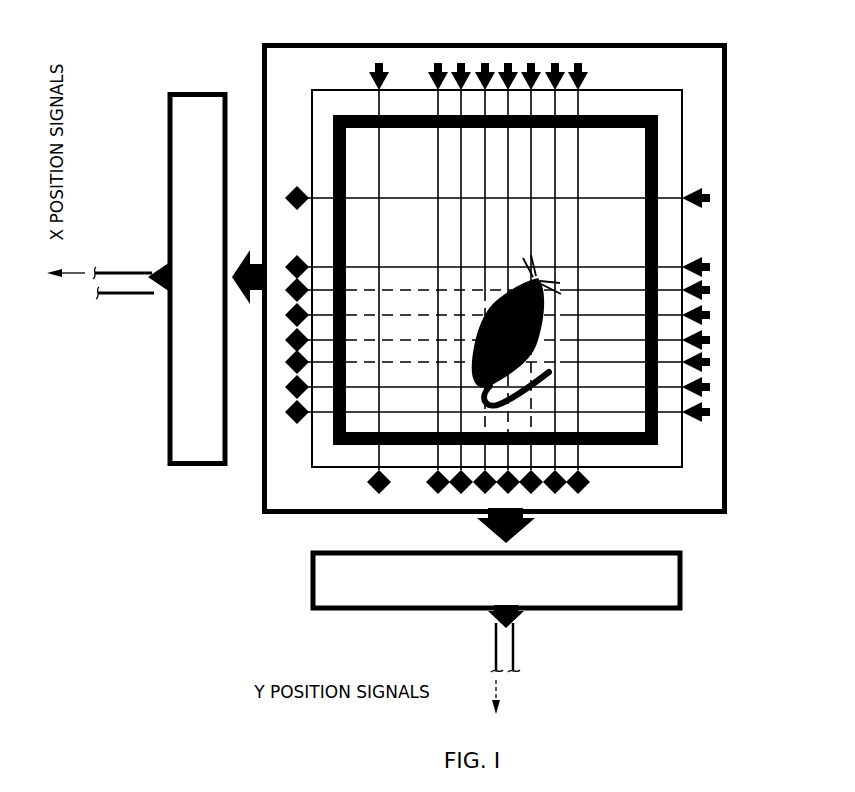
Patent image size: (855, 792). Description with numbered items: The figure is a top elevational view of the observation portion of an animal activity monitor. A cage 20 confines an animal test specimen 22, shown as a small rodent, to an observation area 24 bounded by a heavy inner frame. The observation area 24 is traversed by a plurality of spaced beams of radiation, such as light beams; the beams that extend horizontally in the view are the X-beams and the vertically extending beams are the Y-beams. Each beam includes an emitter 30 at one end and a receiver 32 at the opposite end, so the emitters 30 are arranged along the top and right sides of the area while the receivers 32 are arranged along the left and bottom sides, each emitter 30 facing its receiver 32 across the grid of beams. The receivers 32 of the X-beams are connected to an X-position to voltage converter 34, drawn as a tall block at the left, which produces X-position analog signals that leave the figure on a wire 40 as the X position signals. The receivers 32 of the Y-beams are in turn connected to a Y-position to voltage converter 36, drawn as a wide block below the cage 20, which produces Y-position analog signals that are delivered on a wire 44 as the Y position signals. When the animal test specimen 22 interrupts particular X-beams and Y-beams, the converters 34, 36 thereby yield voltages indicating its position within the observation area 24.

The cage 20 is at (436, 43).
The animal test specimen 22 is at (545, 275).
The observation area 24 is at (628, 160).
The emitter 30 is at (370, 78).
The receiver 32 is at (289, 184).
The X-position to voltage converter 34 is at (198, 145).
The Y-position to voltage converter 36 is at (650, 576).
The wire 40 is at (146, 270).
The wire 44 is at (495, 650).